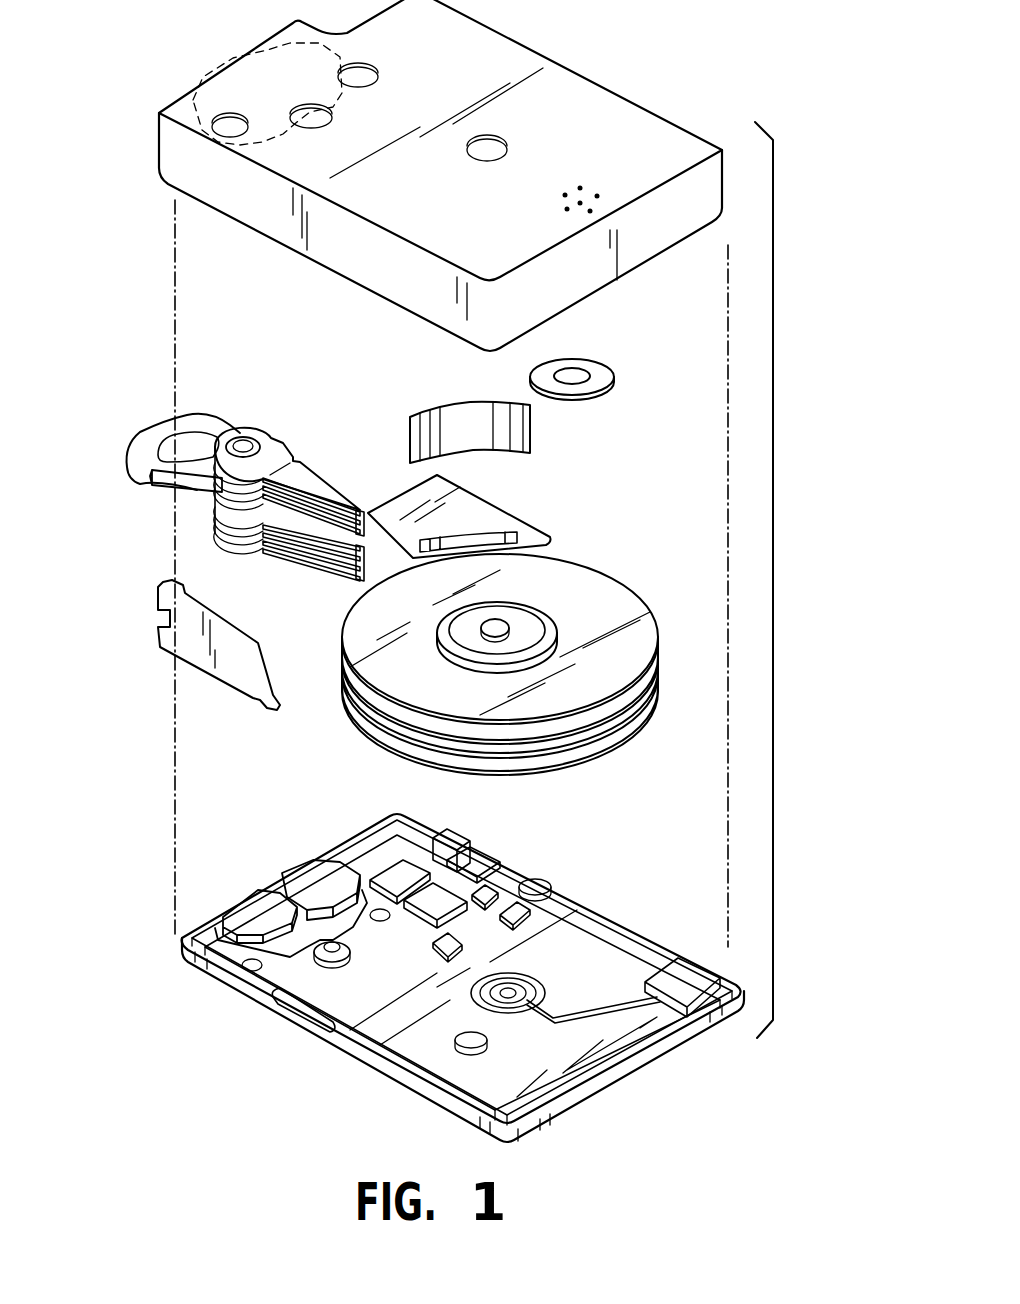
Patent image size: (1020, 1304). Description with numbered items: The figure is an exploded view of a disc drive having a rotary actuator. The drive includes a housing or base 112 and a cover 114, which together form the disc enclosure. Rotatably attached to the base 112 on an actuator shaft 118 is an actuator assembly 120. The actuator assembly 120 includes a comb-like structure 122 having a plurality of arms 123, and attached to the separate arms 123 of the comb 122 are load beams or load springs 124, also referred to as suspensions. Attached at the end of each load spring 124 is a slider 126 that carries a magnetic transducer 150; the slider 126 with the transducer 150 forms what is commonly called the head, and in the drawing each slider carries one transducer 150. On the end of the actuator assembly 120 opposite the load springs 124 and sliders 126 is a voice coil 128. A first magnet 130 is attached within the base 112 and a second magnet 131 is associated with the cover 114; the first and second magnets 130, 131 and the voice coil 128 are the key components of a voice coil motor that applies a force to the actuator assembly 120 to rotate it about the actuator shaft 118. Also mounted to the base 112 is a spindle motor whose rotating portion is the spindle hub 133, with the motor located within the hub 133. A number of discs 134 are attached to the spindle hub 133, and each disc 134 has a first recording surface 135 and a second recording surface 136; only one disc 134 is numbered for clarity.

The base 112 is at (630, 943).
The cover 114 is at (605, 108).
The actuator shaft 118 is at (244, 440).
The actuator assembly 120 is at (193, 497).
The comb-like structure 122 is at (273, 553).
The arms 123 is at (293, 456).
The load beams or load springs 124 is at (315, 483).
The slider 126 is at (360, 512).
The voice coil 128 is at (150, 440).
The first magnet 130 is at (268, 56).
The second magnet 131 is at (243, 910).
The spindle hub 133 is at (505, 628).
The discs 134 is at (625, 605).
The first recording surface 135 is at (642, 652).
The second recording surface 136 is at (660, 683).
The magnetic transducer 150 is at (392, 513).